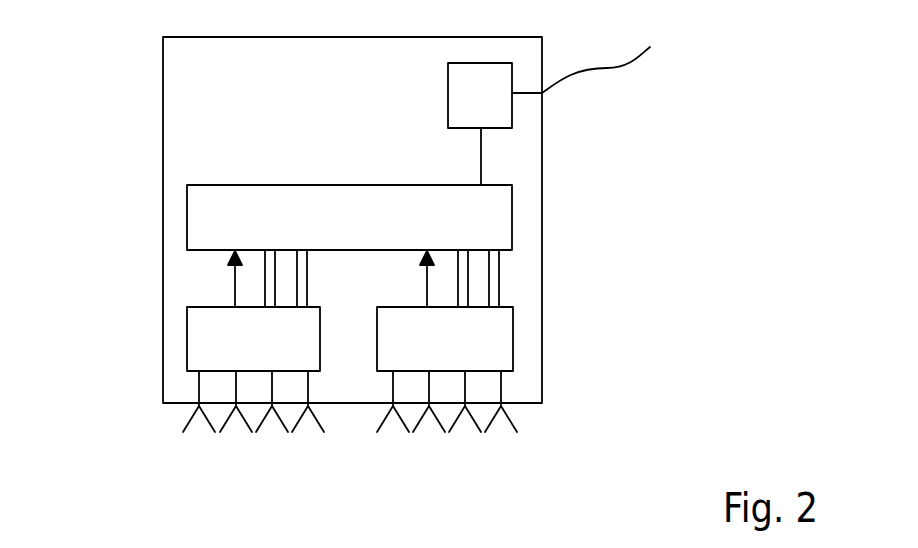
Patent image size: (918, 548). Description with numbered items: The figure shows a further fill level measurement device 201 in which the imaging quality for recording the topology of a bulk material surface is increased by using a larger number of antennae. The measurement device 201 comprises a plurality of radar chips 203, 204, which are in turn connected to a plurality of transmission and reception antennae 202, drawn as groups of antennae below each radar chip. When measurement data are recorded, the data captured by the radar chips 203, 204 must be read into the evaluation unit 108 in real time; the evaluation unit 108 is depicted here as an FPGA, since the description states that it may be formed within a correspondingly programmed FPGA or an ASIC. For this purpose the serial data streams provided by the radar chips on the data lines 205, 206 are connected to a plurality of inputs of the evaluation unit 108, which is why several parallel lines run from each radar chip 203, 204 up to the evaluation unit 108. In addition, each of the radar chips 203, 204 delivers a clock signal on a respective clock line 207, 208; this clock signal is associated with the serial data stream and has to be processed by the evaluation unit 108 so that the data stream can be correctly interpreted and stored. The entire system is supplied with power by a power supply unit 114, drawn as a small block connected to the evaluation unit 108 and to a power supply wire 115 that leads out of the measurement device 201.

The measurement device 201 is at (163, 78).
The power supply unit 114 is at (448, 82).
The power supply wire 115 is at (612, 70).
The evaluation unit 108 is at (298, 185).
The clock line 207 is at (230, 277).
The clock line 208 is at (424, 283).
The data line 205 is at (275, 274).
The data line 206 is at (470, 262).
The radar chip 203 is at (320, 344).
The radar chip 204 is at (513, 346).
The transmission and reception antennae 202 is at (237, 438).